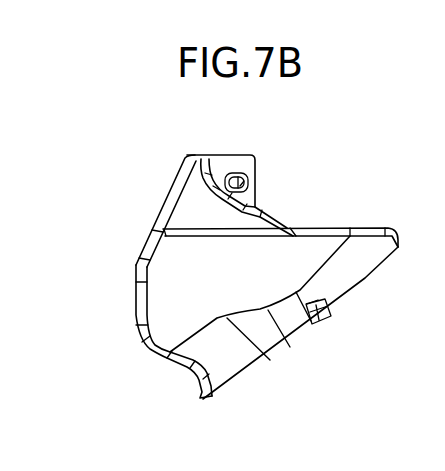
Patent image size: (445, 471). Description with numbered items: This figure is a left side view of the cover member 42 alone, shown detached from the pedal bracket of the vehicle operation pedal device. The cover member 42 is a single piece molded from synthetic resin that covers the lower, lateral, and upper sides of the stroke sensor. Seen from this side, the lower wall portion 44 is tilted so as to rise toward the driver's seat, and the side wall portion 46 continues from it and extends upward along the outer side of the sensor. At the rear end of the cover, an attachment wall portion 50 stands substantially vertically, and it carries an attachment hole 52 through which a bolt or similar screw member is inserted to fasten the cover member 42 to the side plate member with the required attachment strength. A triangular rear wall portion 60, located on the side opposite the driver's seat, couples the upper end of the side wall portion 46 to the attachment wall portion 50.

The cover member 42 is at (133, 166).
The lower wall portion 44 is at (263, 345).
The side wall portion 46 is at (172, 278).
The attachment wall portion 50 is at (243, 175).
The attachment hole 52 is at (249, 177).
The rear wall portion 60 is at (178, 172).